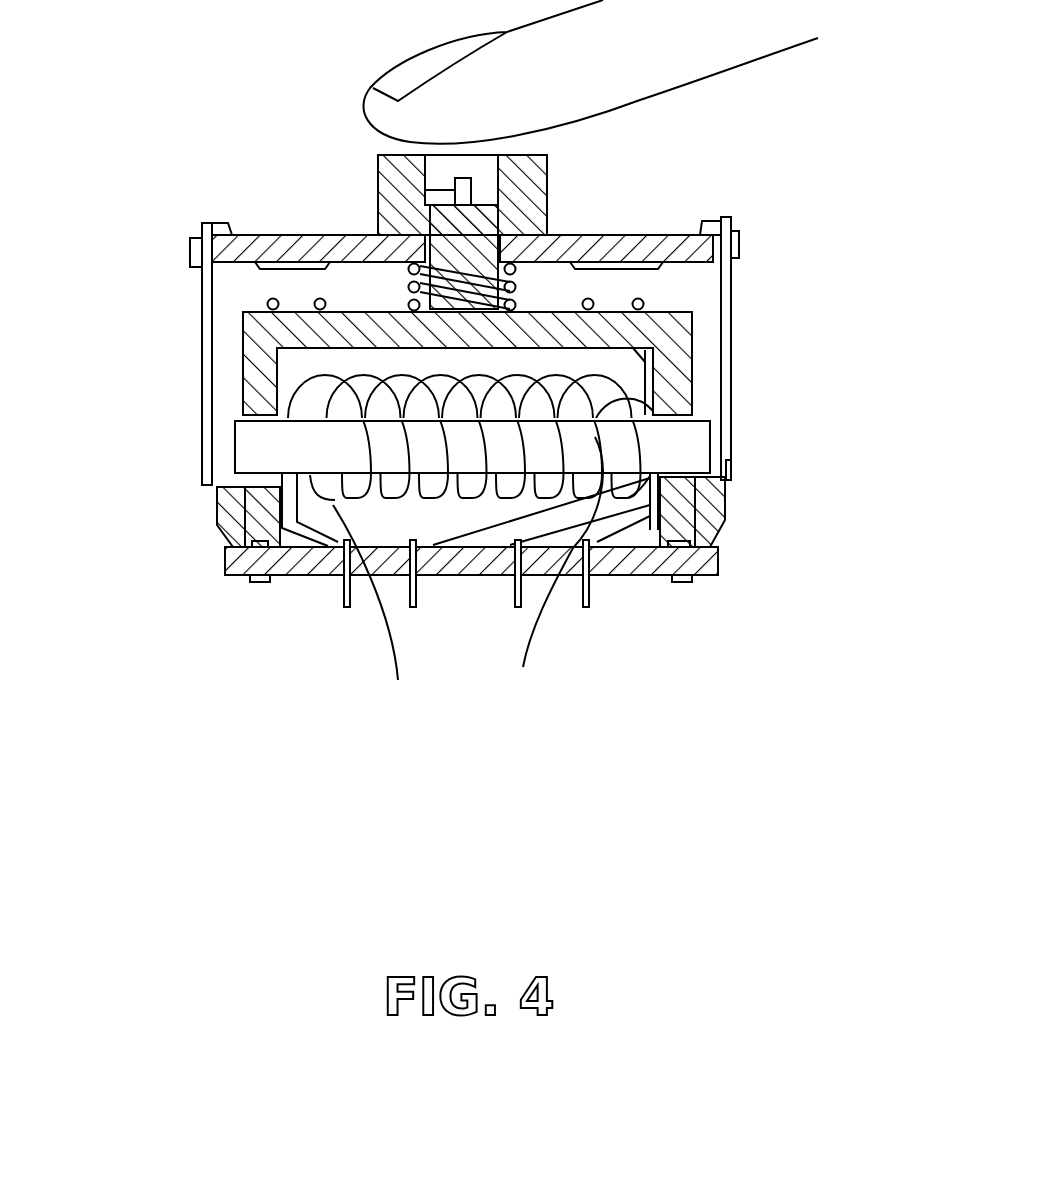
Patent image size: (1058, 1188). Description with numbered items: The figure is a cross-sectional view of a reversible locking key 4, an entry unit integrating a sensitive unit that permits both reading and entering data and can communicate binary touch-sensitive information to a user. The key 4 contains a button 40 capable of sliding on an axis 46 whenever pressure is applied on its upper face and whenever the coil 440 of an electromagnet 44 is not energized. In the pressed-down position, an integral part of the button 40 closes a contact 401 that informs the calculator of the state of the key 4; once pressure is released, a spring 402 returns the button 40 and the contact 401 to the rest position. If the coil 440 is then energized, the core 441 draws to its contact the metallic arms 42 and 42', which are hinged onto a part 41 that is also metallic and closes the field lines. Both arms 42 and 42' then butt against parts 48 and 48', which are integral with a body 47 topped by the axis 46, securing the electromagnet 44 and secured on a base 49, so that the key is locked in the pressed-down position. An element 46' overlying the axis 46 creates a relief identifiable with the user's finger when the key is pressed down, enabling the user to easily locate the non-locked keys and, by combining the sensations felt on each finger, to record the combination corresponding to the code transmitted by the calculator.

The reversible locking key 4 is at (725, 575).
The button 40 is at (548, 214).
The contact 401 is at (612, 285).
The spring 402 is at (412, 283).
The part 41 is at (205, 237).
The metallic arm 42 is at (119, 354).
The metallic arm 42' is at (801, 348).
The electromagnet 44 is at (403, 718).
The coil 440 is at (379, 613).
The core 441 is at (541, 571).
The axis 46 is at (538, 222).
The element 46' is at (369, 160).
The body 47 is at (250, 377).
The part 48 is at (160, 530).
The part 48' is at (762, 512).
The base 49 is at (237, 580).